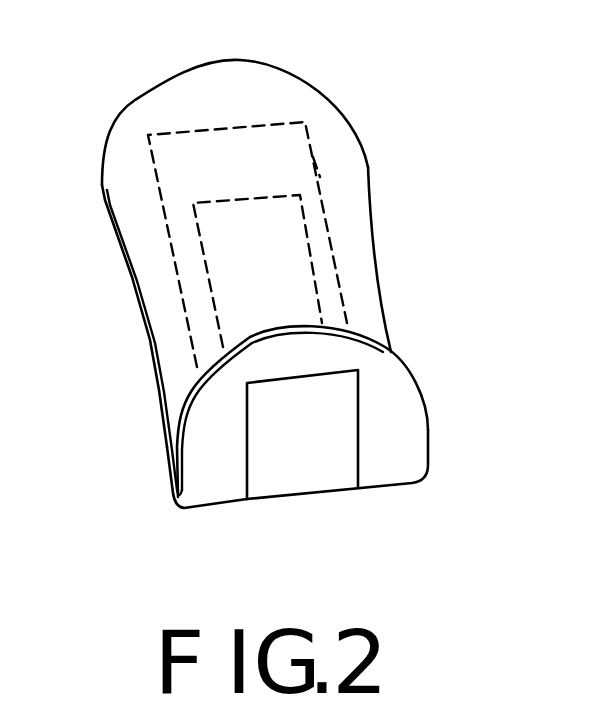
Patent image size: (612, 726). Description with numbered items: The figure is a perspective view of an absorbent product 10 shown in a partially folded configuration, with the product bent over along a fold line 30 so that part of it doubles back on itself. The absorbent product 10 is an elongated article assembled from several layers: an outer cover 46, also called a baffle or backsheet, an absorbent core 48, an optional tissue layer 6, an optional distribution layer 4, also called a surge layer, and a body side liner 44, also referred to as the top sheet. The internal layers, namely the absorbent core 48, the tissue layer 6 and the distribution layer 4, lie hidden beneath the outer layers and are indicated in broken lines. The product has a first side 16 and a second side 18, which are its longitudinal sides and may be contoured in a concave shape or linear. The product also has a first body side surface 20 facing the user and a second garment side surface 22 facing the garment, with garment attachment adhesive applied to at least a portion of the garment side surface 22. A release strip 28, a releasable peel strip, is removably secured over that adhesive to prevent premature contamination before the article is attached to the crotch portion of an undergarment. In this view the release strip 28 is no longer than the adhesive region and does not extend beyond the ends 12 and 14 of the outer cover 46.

The absorbent product 10 is at (384, 72).
The end of the outer cover 12 is at (153, 83).
The end of the outer cover 14 is at (347, 347).
The first side 16 is at (150, 338).
The second side 18 is at (378, 282).
The first body side surface 20 is at (270, 83).
The second garment side surface 22 is at (397, 447).
The release strip 28 is at (313, 457).
The fold line 30 is at (195, 512).
The body side liner 44 is at (210, 97).
The outer cover 46 is at (213, 467).
The absorbent core 48 is at (313, 140).
The distribution layer 4 is at (313, 200).
The tissue layer 6 is at (320, 177).